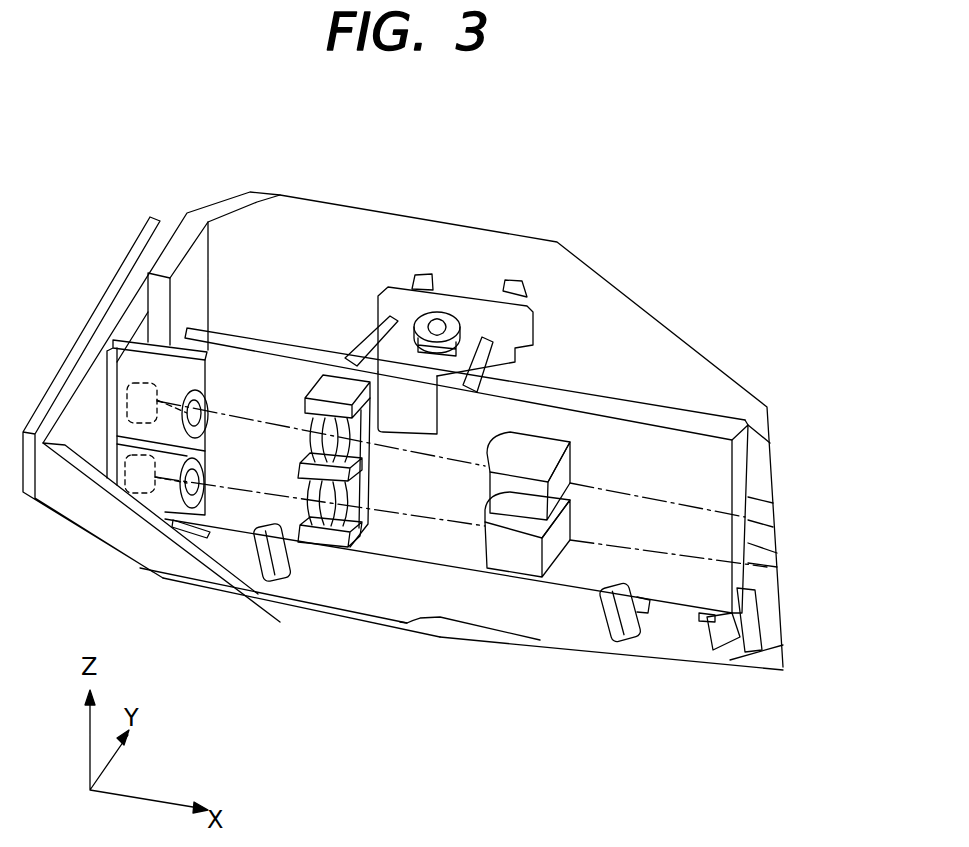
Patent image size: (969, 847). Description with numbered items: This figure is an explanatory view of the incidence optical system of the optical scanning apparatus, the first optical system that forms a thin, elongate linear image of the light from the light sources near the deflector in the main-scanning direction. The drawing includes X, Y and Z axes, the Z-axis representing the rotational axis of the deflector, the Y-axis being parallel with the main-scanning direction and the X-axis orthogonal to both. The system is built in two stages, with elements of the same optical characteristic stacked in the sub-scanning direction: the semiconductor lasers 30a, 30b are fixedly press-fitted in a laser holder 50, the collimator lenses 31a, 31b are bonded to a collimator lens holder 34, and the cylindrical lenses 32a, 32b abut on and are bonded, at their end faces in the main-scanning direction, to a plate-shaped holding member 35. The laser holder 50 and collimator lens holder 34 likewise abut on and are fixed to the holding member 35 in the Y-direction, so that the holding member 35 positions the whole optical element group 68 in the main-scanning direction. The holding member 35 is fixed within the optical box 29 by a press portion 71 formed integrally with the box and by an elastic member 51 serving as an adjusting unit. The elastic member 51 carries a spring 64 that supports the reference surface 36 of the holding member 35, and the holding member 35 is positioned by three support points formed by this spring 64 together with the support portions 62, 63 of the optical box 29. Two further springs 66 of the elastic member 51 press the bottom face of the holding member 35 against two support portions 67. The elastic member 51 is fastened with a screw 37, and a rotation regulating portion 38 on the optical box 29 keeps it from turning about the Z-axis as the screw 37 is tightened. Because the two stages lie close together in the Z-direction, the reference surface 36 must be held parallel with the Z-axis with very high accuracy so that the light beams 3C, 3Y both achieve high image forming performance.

The optical box 29 is at (647, 647).
The semiconductor laser 30a is at (110, 503).
The semiconductor laser 30b is at (136, 380).
The collimator lens 31a is at (310, 512).
The collimator lens 31b is at (322, 432).
The cylindrical lens 32a is at (500, 553).
The cylindrical lens 32b is at (540, 452).
The collimator lens holder 34 is at (363, 528).
The holding member 35 is at (747, 457).
The reference surface 36 is at (660, 443).
The screw 37 is at (560, 313).
The rotation regulating portion 38 is at (500, 303).
The light beam 3Y is at (643, 490).
The light beam 3C is at (647, 547).
The laser holder 50 is at (188, 338).
The elastic member 51 is at (403, 307).
The support portion 62 is at (287, 559).
The support portion 63 is at (607, 627).
The spring 64 is at (423, 413).
The springs 66 is at (367, 343).
The support portions 67 is at (173, 520).
The optical element group 68 is at (410, 643).
The press portion 71 is at (760, 597).